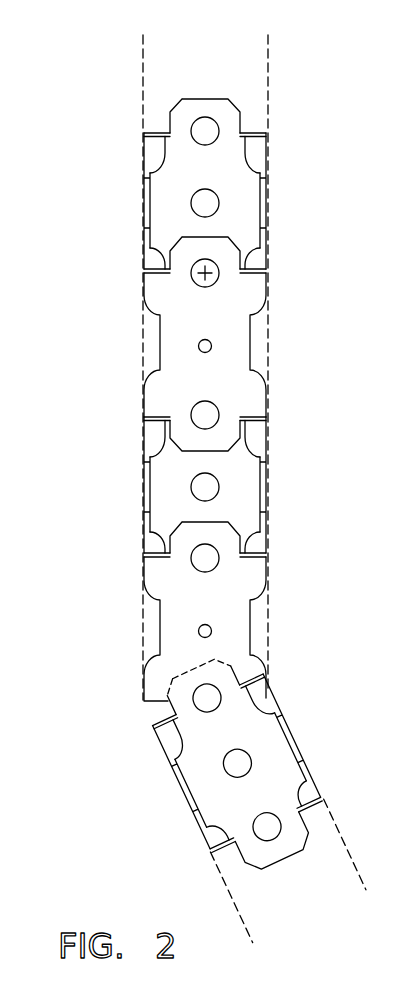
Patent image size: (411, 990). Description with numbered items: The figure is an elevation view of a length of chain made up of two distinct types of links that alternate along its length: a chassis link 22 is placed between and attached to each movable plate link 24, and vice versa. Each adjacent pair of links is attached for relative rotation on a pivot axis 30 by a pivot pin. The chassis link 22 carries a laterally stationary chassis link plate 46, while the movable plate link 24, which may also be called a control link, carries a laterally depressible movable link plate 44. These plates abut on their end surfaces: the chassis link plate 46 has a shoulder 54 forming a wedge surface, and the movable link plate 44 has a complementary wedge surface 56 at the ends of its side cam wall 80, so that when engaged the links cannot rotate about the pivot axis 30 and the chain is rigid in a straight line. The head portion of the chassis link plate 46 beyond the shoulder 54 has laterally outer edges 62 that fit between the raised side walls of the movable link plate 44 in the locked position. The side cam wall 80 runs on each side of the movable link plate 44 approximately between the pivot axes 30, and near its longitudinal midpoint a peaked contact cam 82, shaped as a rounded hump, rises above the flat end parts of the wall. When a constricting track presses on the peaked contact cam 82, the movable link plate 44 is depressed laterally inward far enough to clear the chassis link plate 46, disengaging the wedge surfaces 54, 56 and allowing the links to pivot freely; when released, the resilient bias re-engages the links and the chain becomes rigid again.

The chassis link 22 is at (197, 344).
The movable plate link 24 is at (144, 255).
The pivot axis 30 is at (207, 277).
The movable link plate 44 is at (208, 110).
The chassis link plate 46 is at (227, 337).
The shoulder 54 is at (261, 272).
The wedge surface 56 is at (260, 260).
The laterally outer edge 62 is at (268, 553).
The side cam wall 80 is at (266, 150).
The peaked contact cam 82 is at (150, 483).